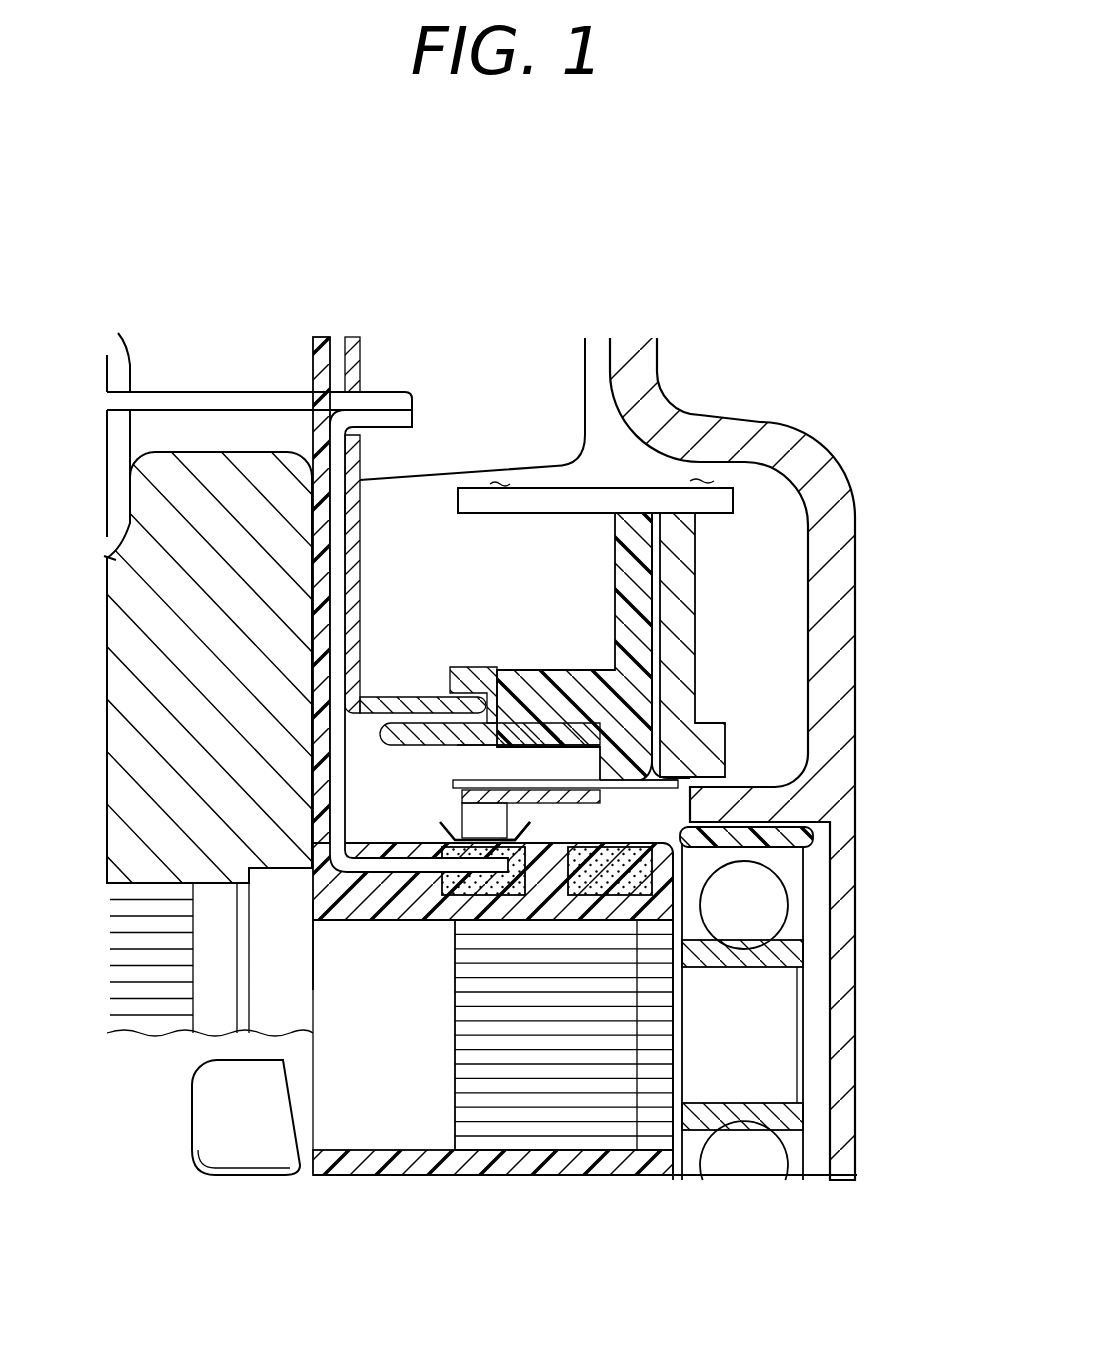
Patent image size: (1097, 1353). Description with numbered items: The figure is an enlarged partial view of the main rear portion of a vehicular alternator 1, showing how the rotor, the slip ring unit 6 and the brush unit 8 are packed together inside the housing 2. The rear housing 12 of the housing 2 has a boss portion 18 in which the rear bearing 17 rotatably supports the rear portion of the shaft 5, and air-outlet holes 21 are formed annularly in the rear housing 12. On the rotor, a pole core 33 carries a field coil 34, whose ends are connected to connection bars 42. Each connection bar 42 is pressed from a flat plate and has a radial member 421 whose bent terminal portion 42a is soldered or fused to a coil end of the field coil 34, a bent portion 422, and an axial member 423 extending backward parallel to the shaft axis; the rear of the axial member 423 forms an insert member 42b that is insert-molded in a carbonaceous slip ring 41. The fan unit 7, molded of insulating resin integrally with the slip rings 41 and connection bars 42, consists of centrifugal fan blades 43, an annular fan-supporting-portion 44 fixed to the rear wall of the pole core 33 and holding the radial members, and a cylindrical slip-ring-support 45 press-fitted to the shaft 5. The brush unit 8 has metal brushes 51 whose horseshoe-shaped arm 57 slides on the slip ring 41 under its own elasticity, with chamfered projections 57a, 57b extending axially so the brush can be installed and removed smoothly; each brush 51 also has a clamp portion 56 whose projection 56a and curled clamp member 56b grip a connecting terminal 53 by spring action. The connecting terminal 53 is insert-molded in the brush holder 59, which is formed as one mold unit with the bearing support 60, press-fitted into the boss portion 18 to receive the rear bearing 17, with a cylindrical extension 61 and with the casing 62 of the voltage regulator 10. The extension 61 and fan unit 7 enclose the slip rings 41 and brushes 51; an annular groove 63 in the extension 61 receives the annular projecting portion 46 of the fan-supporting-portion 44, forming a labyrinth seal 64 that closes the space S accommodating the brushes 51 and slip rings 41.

The alternator 1 is at (748, 270).
The housing 2 is at (732, 756).
The rear housing 12 is at (675, 395).
The fan unit 7 is at (590, 355).
The voltage regulator 10 is at (707, 487).
The centrifugal fan blades 43 is at (515, 418).
The casing 62 is at (735, 503).
The connecting terminal 53 is at (697, 599).
The brush holder 59 is at (683, 757).
The slip ring unit 6 is at (690, 800).
The brush unit 8 is at (700, 682).
The space S is at (607, 838).
The boss portion 18 is at (760, 803).
The bearing support 60 is at (790, 833).
The rear bearing 17 is at (762, 903).
The slip-ring-support 45 is at (640, 910).
The shaft 5 is at (620, 1042).
The clamp portion 56 is at (557, 658).
The projection 56a is at (540, 795).
The clamp member 56b is at (565, 760).
The labyrinth seal 64 is at (435, 720).
The annular groove 63 is at (487, 685).
The annular projecting portion 46 is at (410, 710).
The fan-supporting-portion 44 is at (356, 604).
The cylindrical extension 61 is at (492, 732).
The brush 51 is at (462, 813).
The projection 57a is at (447, 832).
The projection 57b is at (526, 830).
The arm 57 is at (492, 883).
The insert member 42b is at (563, 897).
The slip ring 41 is at (600, 882).
The connection bar 42 is at (345, 565).
The bent terminal portion 42a is at (393, 415).
The radial member 421 is at (345, 513).
The bent portion 422 is at (313, 940).
The axial member 423 is at (375, 880).
The air-outlet hole 21 is at (225, 1115).
The pole core 33 is at (240, 473).
The field coil 34 is at (110, 378).